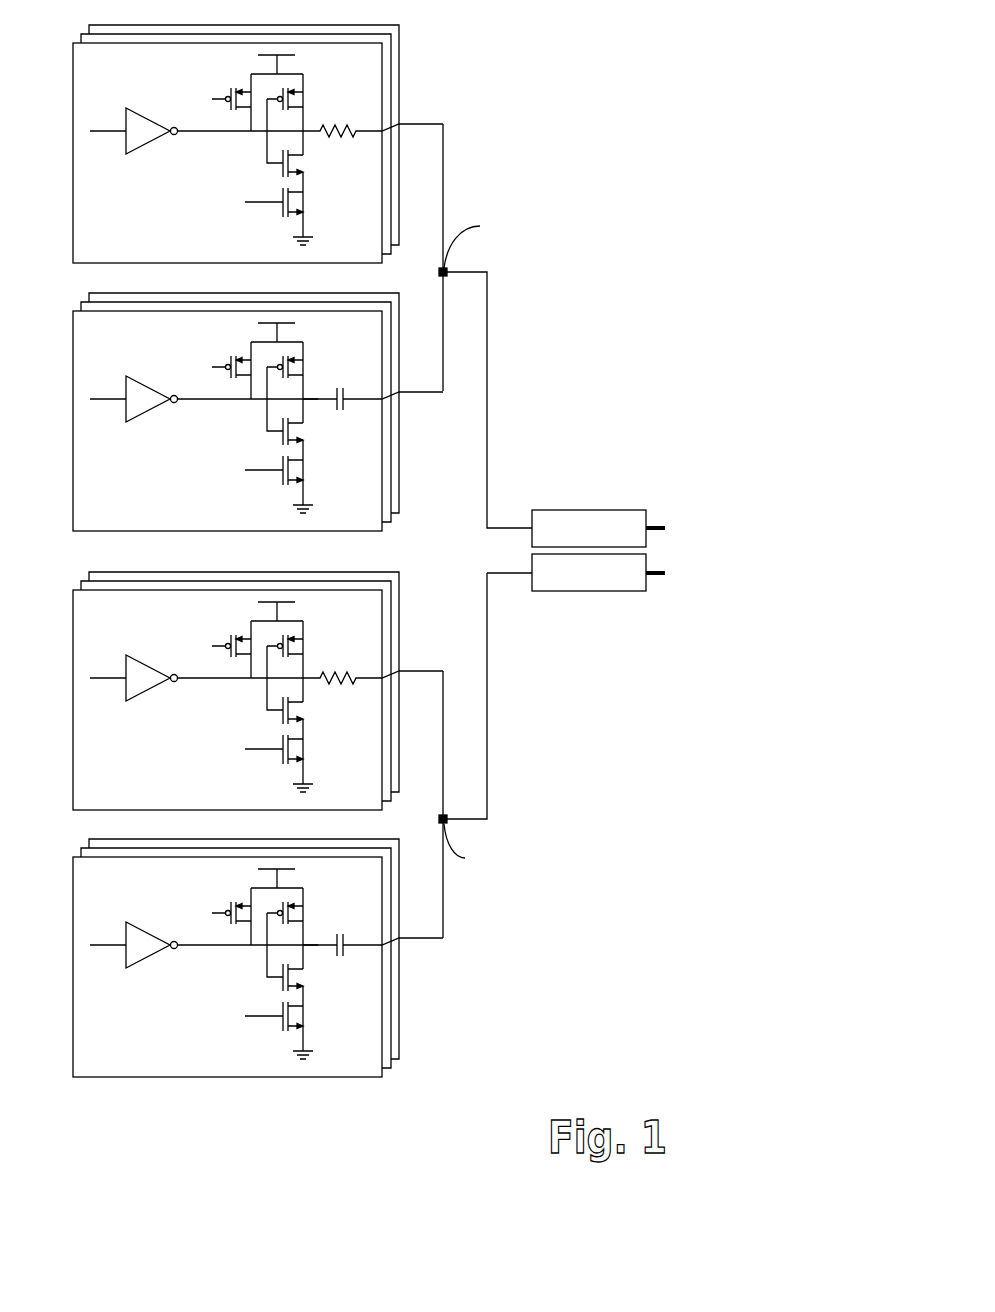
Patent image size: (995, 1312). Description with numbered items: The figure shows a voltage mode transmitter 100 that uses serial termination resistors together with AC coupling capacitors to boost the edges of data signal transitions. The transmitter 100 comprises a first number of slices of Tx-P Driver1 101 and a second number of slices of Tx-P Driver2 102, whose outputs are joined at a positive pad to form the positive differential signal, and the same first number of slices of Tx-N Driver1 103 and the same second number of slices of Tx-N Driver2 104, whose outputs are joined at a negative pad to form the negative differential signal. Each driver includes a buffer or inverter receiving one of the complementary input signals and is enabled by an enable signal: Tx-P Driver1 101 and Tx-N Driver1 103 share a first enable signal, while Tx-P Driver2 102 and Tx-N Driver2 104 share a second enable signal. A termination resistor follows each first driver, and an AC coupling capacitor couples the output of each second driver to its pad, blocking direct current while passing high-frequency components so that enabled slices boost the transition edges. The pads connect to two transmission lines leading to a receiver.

The voltage mode transmitter 100 is at (393, 543).
The Tx-P Driver1 101 is at (227, 68).
The Tx-P Driver2 102 is at (241, 407).
The Tx-N Driver1 103 is at (241, 686).
The Tx-N Driver2 104 is at (241, 953).